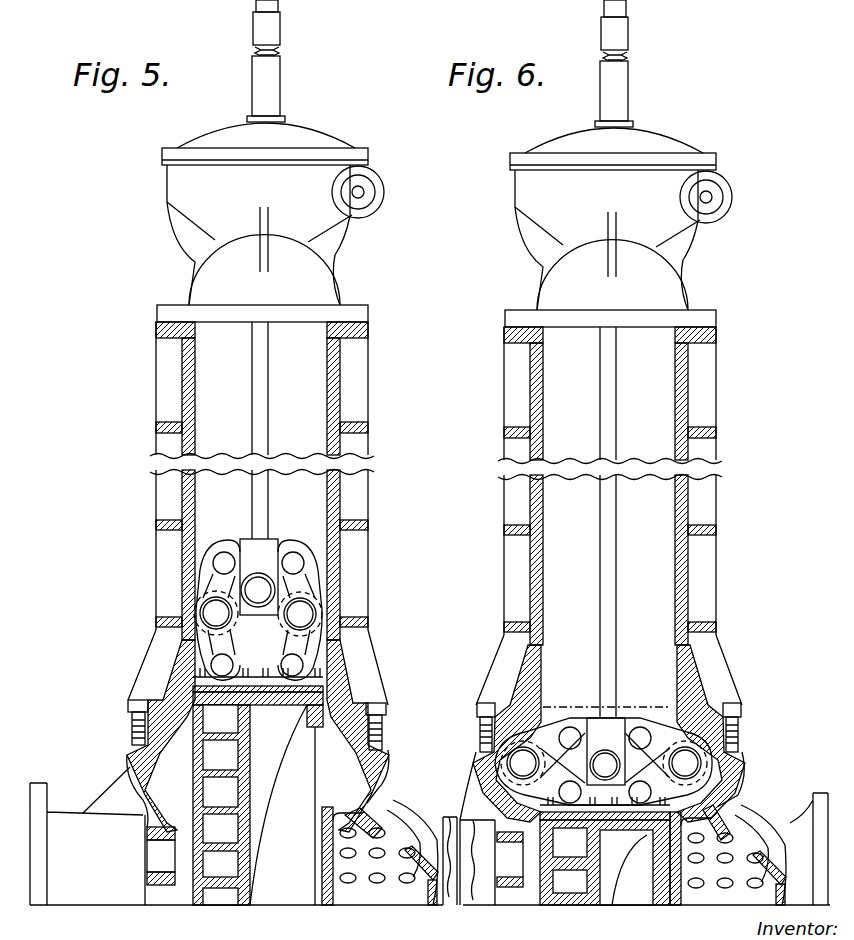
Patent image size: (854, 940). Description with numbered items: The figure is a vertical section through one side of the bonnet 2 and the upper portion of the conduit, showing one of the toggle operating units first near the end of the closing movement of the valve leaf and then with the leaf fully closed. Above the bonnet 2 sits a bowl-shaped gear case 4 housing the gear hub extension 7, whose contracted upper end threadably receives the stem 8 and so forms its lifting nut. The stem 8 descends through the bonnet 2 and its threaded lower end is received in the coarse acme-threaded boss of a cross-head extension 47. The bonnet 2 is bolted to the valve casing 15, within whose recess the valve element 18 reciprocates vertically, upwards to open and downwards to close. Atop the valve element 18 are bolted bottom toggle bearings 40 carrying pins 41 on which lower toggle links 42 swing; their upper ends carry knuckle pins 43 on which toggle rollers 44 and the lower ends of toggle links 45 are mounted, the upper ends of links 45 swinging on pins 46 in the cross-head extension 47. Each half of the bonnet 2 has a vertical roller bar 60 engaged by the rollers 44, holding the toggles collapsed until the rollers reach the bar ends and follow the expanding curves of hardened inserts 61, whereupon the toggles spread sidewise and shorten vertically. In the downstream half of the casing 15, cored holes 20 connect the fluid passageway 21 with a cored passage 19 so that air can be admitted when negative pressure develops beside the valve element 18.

In FIG. 5, the bonnet 2 is at (347, 502).
In FIG. 6, the bonnet 2 is at (597, 516).
In FIG. 5, the gear case 4 is at (182, 192).
In FIG. 6, the gear case 4 is at (602, 219).
In FIG. 5, the gear hub extension 7 is at (277, 79).
In FIG. 6, the gear hub extension 7 is at (609, 373).
In FIG. 5, the stem 8 is at (263, 498).
In FIG. 6, the stem 8 is at (593, 522).
In FIG. 5, the valve casing 15 is at (118, 890).
In FIG. 6, the valve casing 15 is at (480, 905).
In FIG. 5, the valve element 18 is at (197, 907).
In FIG. 6, the valve element 18 is at (548, 908).
In FIG. 5, the cored passage 19 is at (383, 800).
In FIG. 6, the cored passage 19 is at (748, 847).
In FIG. 5, the cored holes 20 is at (407, 883).
In FIG. 6, the cored holes 20 is at (755, 888).
In FIG. 5, the fluid passageway 21 is at (395, 830).
In FIG. 6, the fluid passageway 21 is at (723, 830).
In FIG. 5, the bottom toggle bearing 40 is at (315, 680).
In FIG. 6, the bottom toggle bearing 40 is at (605, 808).
In FIG. 5, the pin 41 is at (222, 662).
In FIG. 6, the pin 41 is at (605, 792).
In FIG. 5, the lower toggle link 42 is at (330, 640).
In FIG. 5, the knuckle pin 43 is at (302, 613).
In FIG. 6, the knuckle pin 43 is at (603, 761).
In FIG. 5, the toggle roller 44 is at (212, 612).
In FIG. 6, the toggle roller 44 is at (604, 763).
In FIG. 5, the toggle link 45 is at (307, 578).
In FIG. 5, the pin 46 is at (225, 552).
In FIG. 6, the pin 46 is at (605, 738).
In FIG. 5, the cross-head extension 47 is at (265, 548).
In FIG. 6, the cross-head extension 47 is at (606, 751).
In FIG. 5, the roller bar 60 is at (324, 403).
In FIG. 6, the roller bar 60 is at (637, 512).
In FIG. 5, the insert 61 is at (127, 728).
In FIG. 6, the insert 61 is at (497, 712).